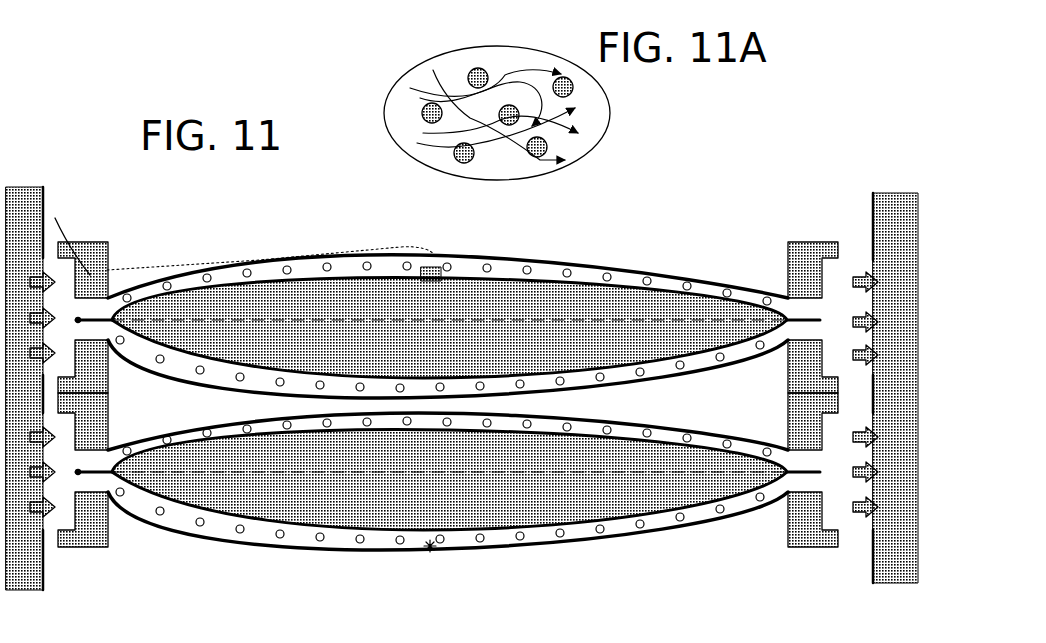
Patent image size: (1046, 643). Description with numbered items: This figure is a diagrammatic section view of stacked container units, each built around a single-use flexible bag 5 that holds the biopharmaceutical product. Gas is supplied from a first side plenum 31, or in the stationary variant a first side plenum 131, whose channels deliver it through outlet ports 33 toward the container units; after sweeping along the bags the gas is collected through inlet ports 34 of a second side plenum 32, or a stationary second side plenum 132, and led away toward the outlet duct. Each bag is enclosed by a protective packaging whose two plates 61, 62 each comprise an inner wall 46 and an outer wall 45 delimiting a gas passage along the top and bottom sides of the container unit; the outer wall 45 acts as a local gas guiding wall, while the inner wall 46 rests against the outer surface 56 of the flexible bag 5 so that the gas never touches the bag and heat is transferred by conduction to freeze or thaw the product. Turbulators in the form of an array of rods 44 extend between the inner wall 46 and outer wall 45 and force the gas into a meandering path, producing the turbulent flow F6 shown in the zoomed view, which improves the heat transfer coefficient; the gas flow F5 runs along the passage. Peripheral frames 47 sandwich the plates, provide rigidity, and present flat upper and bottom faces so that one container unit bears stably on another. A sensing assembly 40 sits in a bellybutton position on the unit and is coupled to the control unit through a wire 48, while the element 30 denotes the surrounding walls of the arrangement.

In FIG. 11, the single-use flexible bag 5 is at (470, 354).
In FIG. 11, the housing wall 30 is at (22, 210).
In FIG. 11, the first side plenum 31 is at (74, 316).
In FIG. 11, the first side plenum 131 is at (41, 181).
In FIG. 11, the second side plenum 32 is at (836, 318).
In FIG. 11, the second side plenum 132 is at (877, 182).
In FIG. 11, the outlet ports 33 is at (50, 270).
In FIG. 11, the inlet ports 34 is at (872, 258).
In FIG. 11, the sensing assembly 40 is at (436, 281).
In FIG. 11, the turbulators 44 is at (448, 372).
In FIG. 11A, the turbulators 44 is at (460, 157).
In FIG. 11, the outer wall 45 is at (710, 281).
In FIG. 11, the inner wall 46 is at (448, 401).
In FIG. 11, the frame 47 is at (93, 548).
In FIG. 11, the wire 48 is at (210, 262).
In FIG. 11, the outer surface of the flexible bag 56 is at (448, 404).
In FIG. 11, the plate 61 is at (181, 526).
In FIG. 11, the plate 62 is at (154, 437).
In FIG. 11, the flow direction F5 is at (430, 550).
In FIG. 11A, the turbulent flow F6 is at (517, 82).